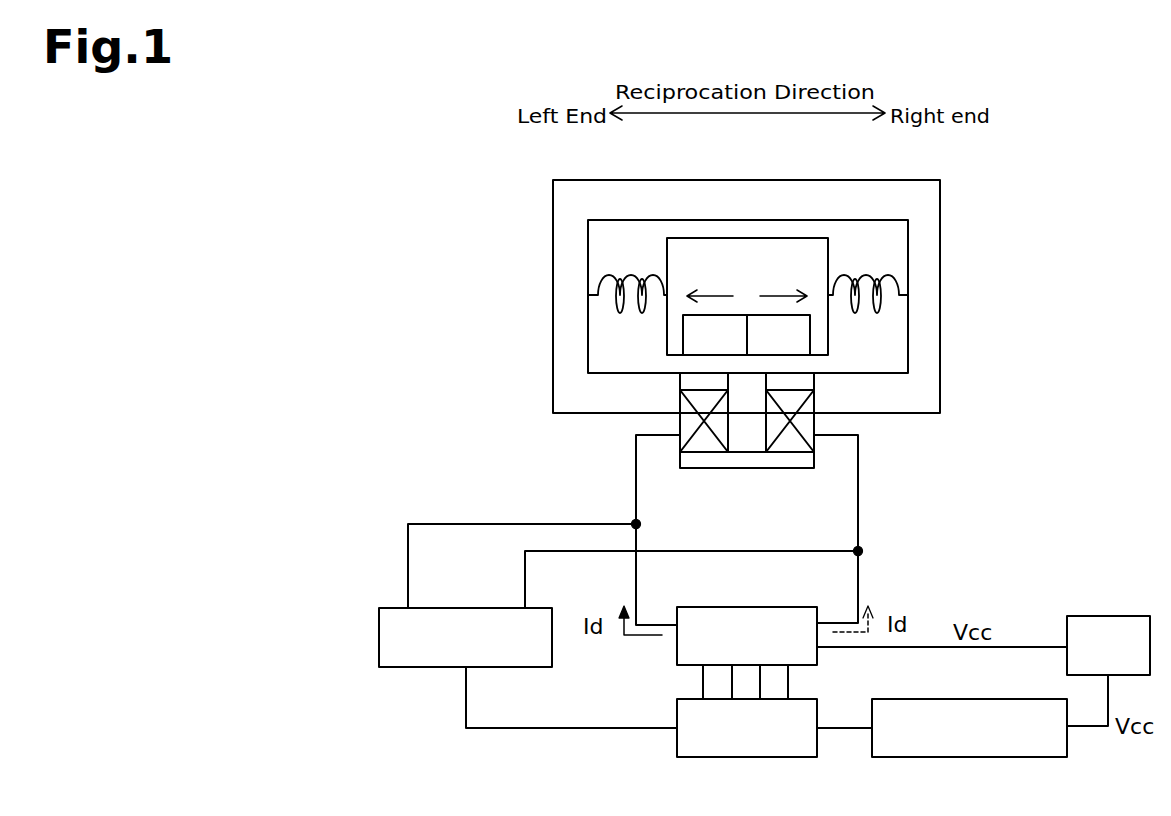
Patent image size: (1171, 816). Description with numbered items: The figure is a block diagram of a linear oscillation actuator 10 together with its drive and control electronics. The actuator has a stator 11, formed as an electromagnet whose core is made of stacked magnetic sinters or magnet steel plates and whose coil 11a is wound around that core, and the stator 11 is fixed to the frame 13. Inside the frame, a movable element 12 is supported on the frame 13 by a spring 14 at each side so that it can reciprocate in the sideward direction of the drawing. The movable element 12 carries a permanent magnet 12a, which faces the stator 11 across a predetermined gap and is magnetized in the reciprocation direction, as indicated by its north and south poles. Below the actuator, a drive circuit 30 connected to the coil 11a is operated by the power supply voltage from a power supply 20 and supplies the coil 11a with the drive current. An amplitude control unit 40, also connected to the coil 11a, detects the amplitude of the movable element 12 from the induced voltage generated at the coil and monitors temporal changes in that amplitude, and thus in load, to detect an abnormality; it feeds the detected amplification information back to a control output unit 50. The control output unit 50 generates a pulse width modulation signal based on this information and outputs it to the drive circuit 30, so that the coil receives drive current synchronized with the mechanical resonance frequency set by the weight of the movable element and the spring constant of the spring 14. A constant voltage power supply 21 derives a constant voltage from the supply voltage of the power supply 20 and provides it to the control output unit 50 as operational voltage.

The linear oscillation actuator 10 is at (993, 184).
The stator 11 is at (790, 460).
The coil 11a is at (705, 452).
The movable element 12 is at (667, 348).
The permanent magnet 12a is at (828, 340).
The frame 13 is at (579, 180).
The spring 14 is at (627, 275).
The power supply 20 is at (1108, 616).
The constant voltage power supply 21 is at (968, 758).
The drive circuit 30 is at (745, 605).
The amplitude control unit 40 is at (430, 668).
The control output unit 50 is at (745, 758).